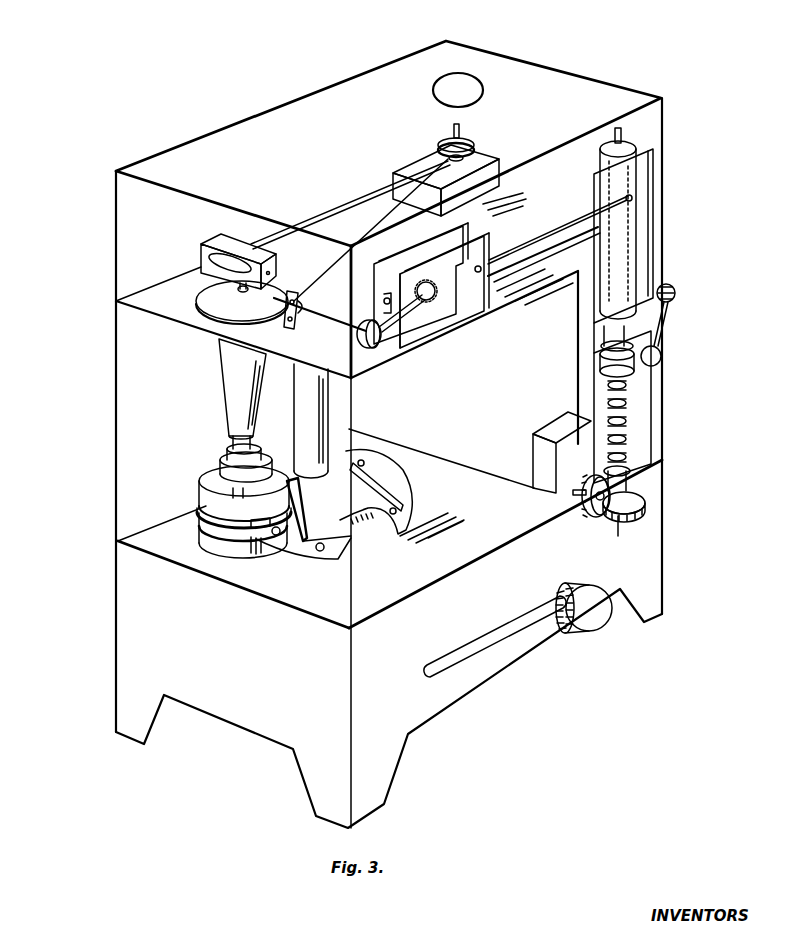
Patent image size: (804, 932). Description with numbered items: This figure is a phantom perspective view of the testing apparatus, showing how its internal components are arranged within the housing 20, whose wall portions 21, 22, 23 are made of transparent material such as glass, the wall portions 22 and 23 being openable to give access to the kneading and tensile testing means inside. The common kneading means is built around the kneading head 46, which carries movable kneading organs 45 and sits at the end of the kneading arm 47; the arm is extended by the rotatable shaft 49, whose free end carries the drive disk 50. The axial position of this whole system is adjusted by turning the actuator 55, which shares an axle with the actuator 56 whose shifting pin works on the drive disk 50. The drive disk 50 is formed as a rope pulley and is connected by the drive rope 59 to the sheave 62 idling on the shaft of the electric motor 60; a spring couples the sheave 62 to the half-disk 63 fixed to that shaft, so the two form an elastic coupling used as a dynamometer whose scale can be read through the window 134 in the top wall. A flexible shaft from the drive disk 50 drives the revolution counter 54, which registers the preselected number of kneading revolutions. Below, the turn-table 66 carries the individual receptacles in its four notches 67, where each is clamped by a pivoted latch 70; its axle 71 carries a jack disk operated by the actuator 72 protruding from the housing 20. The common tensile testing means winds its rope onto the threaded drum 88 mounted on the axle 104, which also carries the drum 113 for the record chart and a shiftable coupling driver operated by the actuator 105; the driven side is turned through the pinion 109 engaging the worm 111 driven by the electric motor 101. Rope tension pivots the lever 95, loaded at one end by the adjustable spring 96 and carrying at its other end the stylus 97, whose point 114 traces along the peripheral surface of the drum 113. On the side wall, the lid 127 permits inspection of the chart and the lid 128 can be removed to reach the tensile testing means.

The housing 20 is at (661, 537).
The wall portion 21 is at (205, 505).
The wall portion 22 is at (257, 590).
The wall portion 23 is at (437, 582).
The kneading organs 45 is at (225, 488).
The kneading head 46 is at (222, 461).
The kneading arm 47 is at (237, 395).
The shaft 49 is at (232, 287).
The drive disk 50 is at (215, 303).
The revolution counter 54 is at (200, 246).
The actuator 55 is at (445, 296).
The actuator 56 is at (300, 312).
The drive rope 59 is at (340, 198).
The electric motor 60 is at (485, 165).
The sheave 62 is at (468, 145).
The half-disk 63 is at (445, 137).
The turn-table 66 is at (320, 530).
The notches 67 is at (375, 530).
The latch 70 is at (200, 535).
The axle 71 is at (313, 410).
The actuator 72 is at (603, 623).
The threaded drum 88 is at (626, 412).
The lever 95 is at (430, 296).
The spring 96 is at (387, 305).
The stylus 97 is at (536, 250).
The electric motor 101 is at (540, 428).
The axle 104 is at (622, 133).
The actuator 105 is at (672, 300).
The pinion 109 is at (645, 497).
The worm 111 is at (586, 514).
The drum 113 is at (635, 165).
The point 114 is at (632, 197).
The lid 127 is at (652, 232).
The lid 128 is at (650, 380).
The window 134 is at (463, 72).